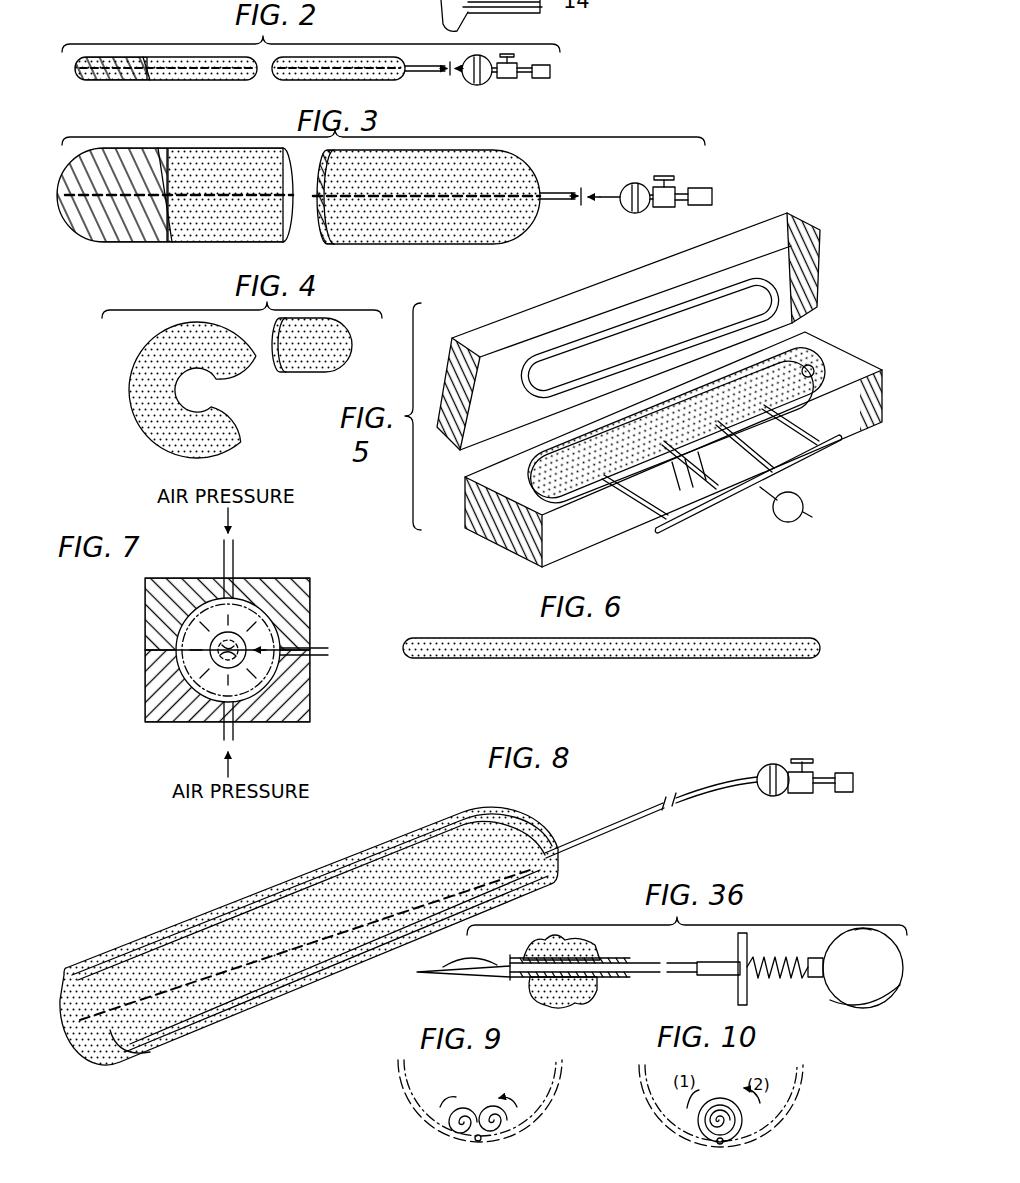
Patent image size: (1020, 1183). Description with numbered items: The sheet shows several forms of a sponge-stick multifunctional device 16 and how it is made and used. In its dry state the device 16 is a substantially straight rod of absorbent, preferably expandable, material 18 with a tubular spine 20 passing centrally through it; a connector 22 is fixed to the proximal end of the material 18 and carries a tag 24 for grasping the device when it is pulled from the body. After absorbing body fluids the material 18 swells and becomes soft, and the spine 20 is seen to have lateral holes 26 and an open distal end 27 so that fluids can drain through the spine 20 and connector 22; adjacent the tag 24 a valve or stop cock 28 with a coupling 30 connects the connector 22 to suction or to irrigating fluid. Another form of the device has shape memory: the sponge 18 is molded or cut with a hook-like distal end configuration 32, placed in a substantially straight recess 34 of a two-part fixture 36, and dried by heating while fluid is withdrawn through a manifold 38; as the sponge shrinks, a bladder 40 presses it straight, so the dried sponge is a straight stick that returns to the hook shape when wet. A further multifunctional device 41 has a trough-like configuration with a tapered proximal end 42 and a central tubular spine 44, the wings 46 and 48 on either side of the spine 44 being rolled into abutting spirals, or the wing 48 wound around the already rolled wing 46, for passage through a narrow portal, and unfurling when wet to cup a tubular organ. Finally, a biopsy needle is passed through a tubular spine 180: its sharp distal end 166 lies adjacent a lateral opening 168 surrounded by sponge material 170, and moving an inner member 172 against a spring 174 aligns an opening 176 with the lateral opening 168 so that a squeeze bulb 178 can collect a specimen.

In FIG. 2, the multifunctional device 16 is at (205, 84).
In FIG. 2, the absorbent material 18 is at (127, 82).
In FIG. 3, the absorbent material 18 is at (143, 240).
In FIG. 4, the absorbent material 18 is at (313, 375).
In FIG. 5, the absorbent material 18 is at (813, 398).
In FIG. 6, the absorbent material 18 is at (726, 640).
In FIG. 2, the tubular spine 20 is at (98, 80).
In FIG. 3, the tubular spine 20 is at (112, 203).
In FIG. 2, the connector 22 is at (437, 74).
In FIG. 3, the connector 22 is at (562, 203).
In FIG. 2, the tag 24 is at (479, 86).
In FIG. 3, the tag 24 is at (630, 184).
In FIG. 2, the lateral holes 26 is at (115, 58).
In FIG. 3, the lateral holes 26 is at (78, 181).
In FIG. 2, the open distal end 27 is at (74, 70).
In FIG. 3, the open distal end 27 is at (60, 195).
In FIG. 2, the valve or stop cock 28 is at (516, 80).
In FIG. 3, the valve or stop cock 28 is at (676, 188).
In FIG. 2, the coupling 30 is at (551, 72).
In FIG. 3, the coupling 30 is at (713, 196).
In FIG. 4, the hook-like distal end configuration 32 is at (147, 428).
In FIG. 5, the hook-like distal end configuration 32 is at (500, 497).
In FIG. 5, the substantially straight recess 34 is at (812, 366).
In FIG. 5, the two-part fixture 36 is at (656, 391).
In FIG. 5, the manifold 38 is at (713, 510).
In FIG. 7, the manifold 38 is at (322, 658).
In FIG. 5, the bladder 40 is at (540, 350).
In FIG. 7, the bladder 40 is at (243, 641).
In FIG. 8, the multifunctional device 41 is at (285, 876).
In FIG. 8, the tapered proximal end 42 is at (528, 820).
In FIG. 8, the tubular spine 44 is at (115, 1062).
In FIG. 9, the tubular spine 44 is at (480, 1143).
In FIG. 9, the wing 46 is at (470, 1107).
In FIG. 10, the wing 46 is at (722, 1103).
In FIG. 9, the wing 48 is at (490, 1103).
In FIG. 10, the wing 48 is at (700, 1130).
In FIG. 36, the sharp distal end 166 is at (449, 971).
In FIG. 36, the lateral opening 168 is at (493, 962).
In FIG. 36, the sponge material 170 is at (540, 993).
In FIG. 36, the inner member 172 is at (623, 975).
In FIG. 36, the spring 174 is at (780, 963).
In FIG. 36, the opening 176 is at (551, 966).
In FIG. 36, the squeeze bulb 178 is at (850, 988).
In FIG. 36, the tubular spine 180 is at (597, 980).